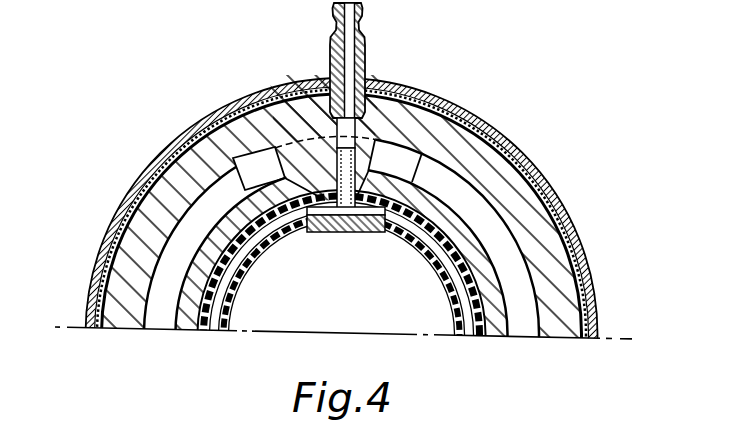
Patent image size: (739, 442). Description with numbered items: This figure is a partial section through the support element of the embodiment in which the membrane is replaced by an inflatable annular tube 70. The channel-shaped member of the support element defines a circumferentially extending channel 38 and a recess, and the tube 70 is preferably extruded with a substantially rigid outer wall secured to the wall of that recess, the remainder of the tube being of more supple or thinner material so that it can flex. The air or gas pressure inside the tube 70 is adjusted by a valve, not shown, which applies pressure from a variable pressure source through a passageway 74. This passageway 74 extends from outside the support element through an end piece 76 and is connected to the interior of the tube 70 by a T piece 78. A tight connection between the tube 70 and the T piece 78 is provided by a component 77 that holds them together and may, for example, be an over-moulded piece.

The circumferentially extending channel 38 is at (470, 188).
The inflatable annular tube 70 is at (453, 278).
The passageway 74 is at (345, 62).
The end piece 76 is at (365, 38).
The component 77 is at (350, 232).
The T piece 78 is at (340, 232).